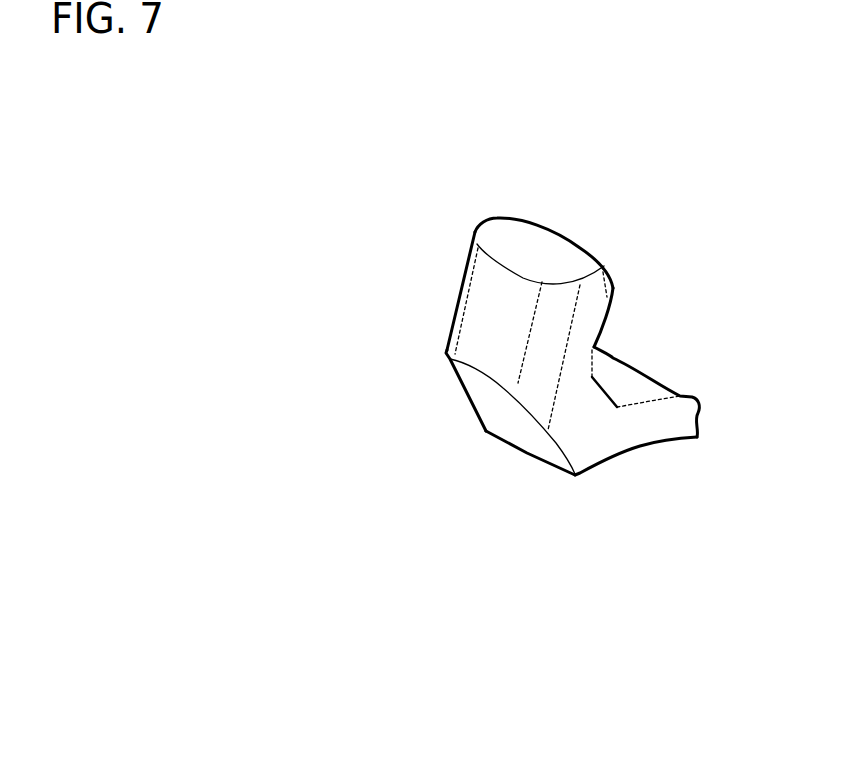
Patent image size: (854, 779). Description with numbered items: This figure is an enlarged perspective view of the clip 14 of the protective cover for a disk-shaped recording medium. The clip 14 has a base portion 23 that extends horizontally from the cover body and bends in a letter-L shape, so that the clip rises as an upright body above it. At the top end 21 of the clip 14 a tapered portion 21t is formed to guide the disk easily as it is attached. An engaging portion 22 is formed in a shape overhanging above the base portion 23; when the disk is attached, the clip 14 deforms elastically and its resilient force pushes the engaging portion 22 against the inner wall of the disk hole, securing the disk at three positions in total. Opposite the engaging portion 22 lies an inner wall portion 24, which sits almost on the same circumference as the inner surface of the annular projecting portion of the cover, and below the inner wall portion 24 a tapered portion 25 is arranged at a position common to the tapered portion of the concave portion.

The clip 14 is at (490, 315).
The top end 21 is at (545, 245).
The tapered portion 21t is at (615, 280).
The engaging portion 22 is at (603, 326).
The base portion 23 is at (608, 443).
The inner wall portion 24 is at (487, 353).
The tapered portion 25 is at (517, 423).